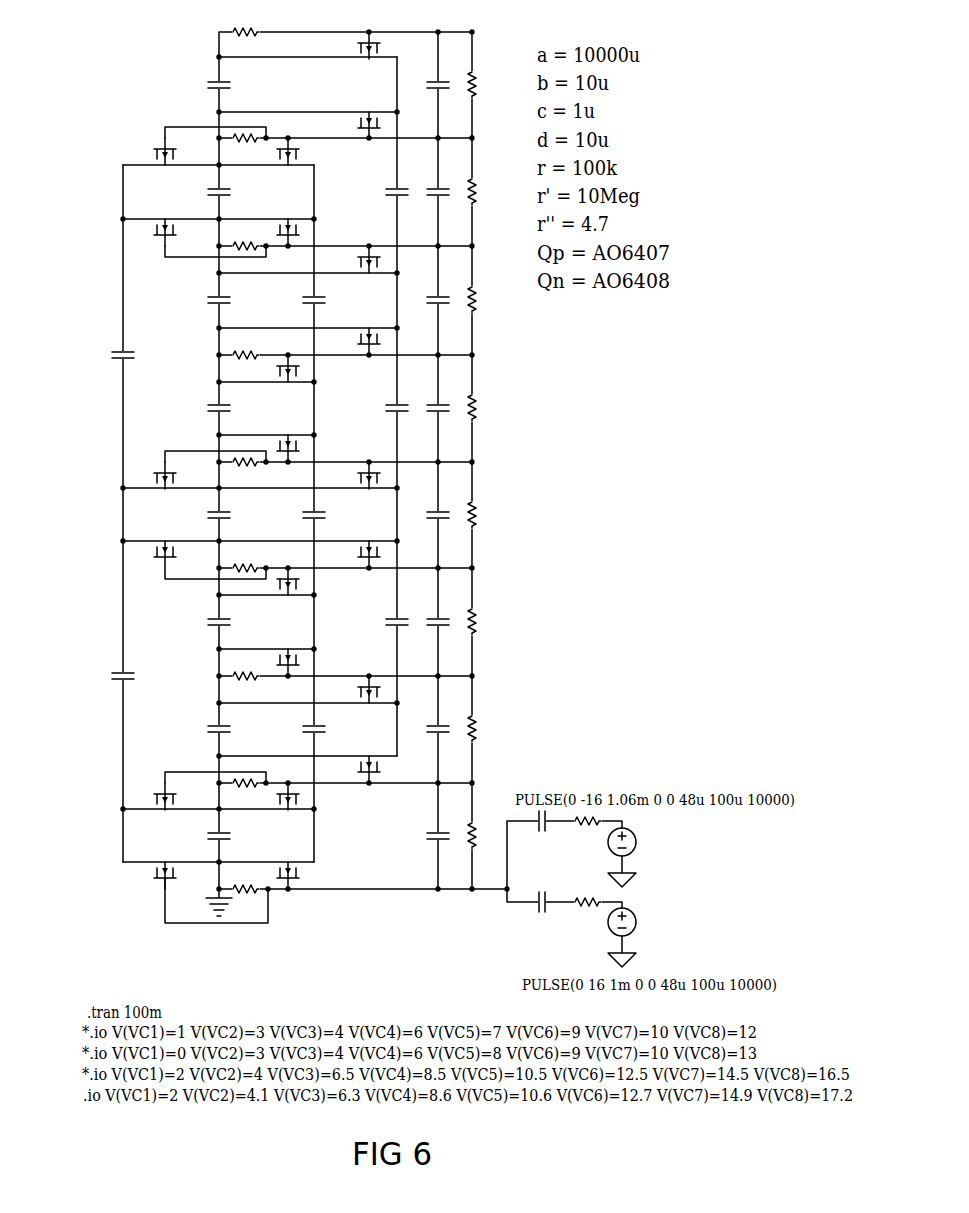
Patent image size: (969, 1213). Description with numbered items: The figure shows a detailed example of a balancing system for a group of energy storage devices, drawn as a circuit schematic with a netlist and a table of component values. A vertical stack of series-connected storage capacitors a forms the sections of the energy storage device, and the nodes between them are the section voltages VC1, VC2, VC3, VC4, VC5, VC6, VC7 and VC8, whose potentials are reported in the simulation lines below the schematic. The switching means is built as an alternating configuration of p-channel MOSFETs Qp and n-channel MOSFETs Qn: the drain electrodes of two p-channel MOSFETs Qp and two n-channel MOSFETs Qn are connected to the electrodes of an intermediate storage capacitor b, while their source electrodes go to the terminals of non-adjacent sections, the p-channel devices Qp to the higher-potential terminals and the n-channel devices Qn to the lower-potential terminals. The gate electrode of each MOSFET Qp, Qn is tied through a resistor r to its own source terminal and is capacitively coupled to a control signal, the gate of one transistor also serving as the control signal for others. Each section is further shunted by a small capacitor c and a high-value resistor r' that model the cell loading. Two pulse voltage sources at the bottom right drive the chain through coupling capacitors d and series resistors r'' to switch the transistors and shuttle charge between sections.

The node VC1 is at (324, 783).
The node VC2 is at (324, 676).
The node VC3 is at (324, 568).
The node VC4 is at (324, 462).
The node VC5 is at (324, 355).
The node VC6 is at (324, 246).
The node VC7 is at (324, 138).
The node VC8 is at (287, 57).
The capacitor a (10000u) a is at (208, 460).
The capacitor b (10u) b is at (253, 460).
The capacitor c (1u) c is at (437, 453).
The capacitor d (10u) d is at (541, 872).
The resistor r (100k) r is at (246, 454).
The resistor r' (10Meg) r' is at (477, 458).
The resistor r'' (4.7) r'' is at (588, 870).
The p-channel MOSFET Qp is at (267, 431).
The n-channel MOSFET Qn is at (267, 491).